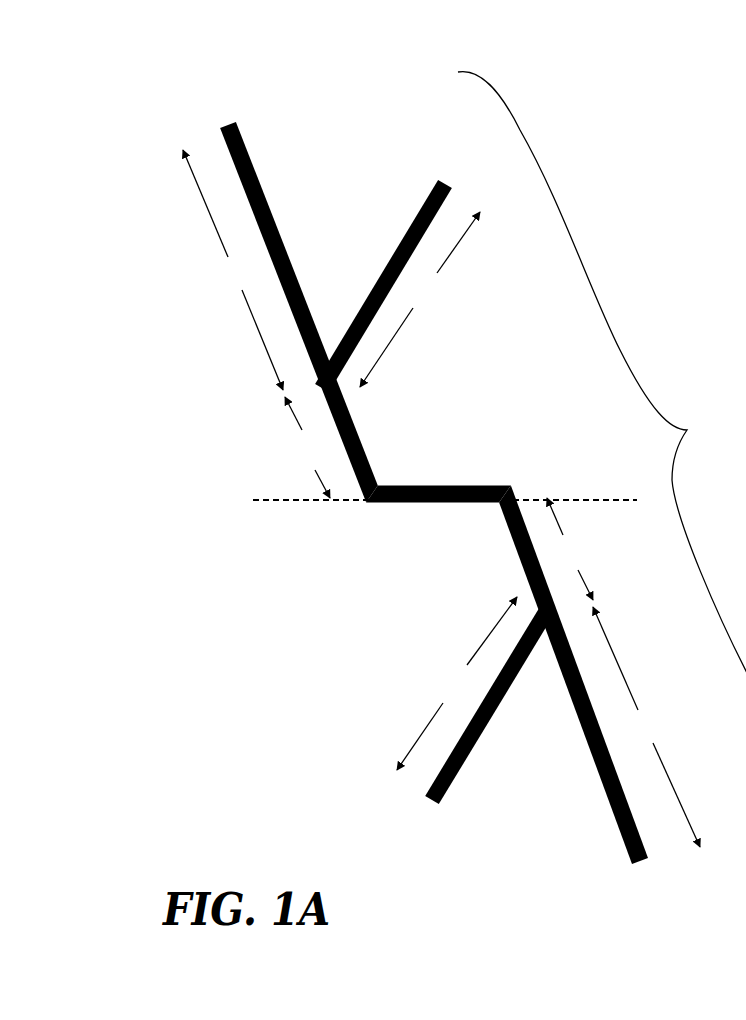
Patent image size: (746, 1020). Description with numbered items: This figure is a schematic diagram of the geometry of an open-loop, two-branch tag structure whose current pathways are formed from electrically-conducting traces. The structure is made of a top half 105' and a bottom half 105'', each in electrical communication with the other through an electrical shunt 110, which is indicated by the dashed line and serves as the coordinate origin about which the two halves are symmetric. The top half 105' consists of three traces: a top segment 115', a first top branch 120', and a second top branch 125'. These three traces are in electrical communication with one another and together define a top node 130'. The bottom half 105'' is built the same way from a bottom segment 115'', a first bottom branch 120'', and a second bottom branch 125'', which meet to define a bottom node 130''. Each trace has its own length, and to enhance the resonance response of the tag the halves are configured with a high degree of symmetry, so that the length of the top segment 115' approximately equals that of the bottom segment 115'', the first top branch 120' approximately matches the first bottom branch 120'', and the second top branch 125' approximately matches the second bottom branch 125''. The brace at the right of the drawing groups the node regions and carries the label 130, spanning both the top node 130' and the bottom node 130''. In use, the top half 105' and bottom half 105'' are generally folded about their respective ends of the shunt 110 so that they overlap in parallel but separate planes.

The top half 105' is at (336, 308).
The bottom half 105'' is at (528, 679).
The electrical shunt 110 is at (478, 483).
The top segment 115' is at (445, 466).
The bottom segment 115'' is at (427, 541).
The first top branch 120' is at (299, 308).
The first bottom branch 120'' is at (573, 679).
The second top branch 125' is at (383, 275).
The second bottom branch 125'' is at (439, 720).
The top node 130' is at (391, 409).
The bottom node 130'' is at (479, 578).
The branch junction region (brace) 130 is at (602, 372).